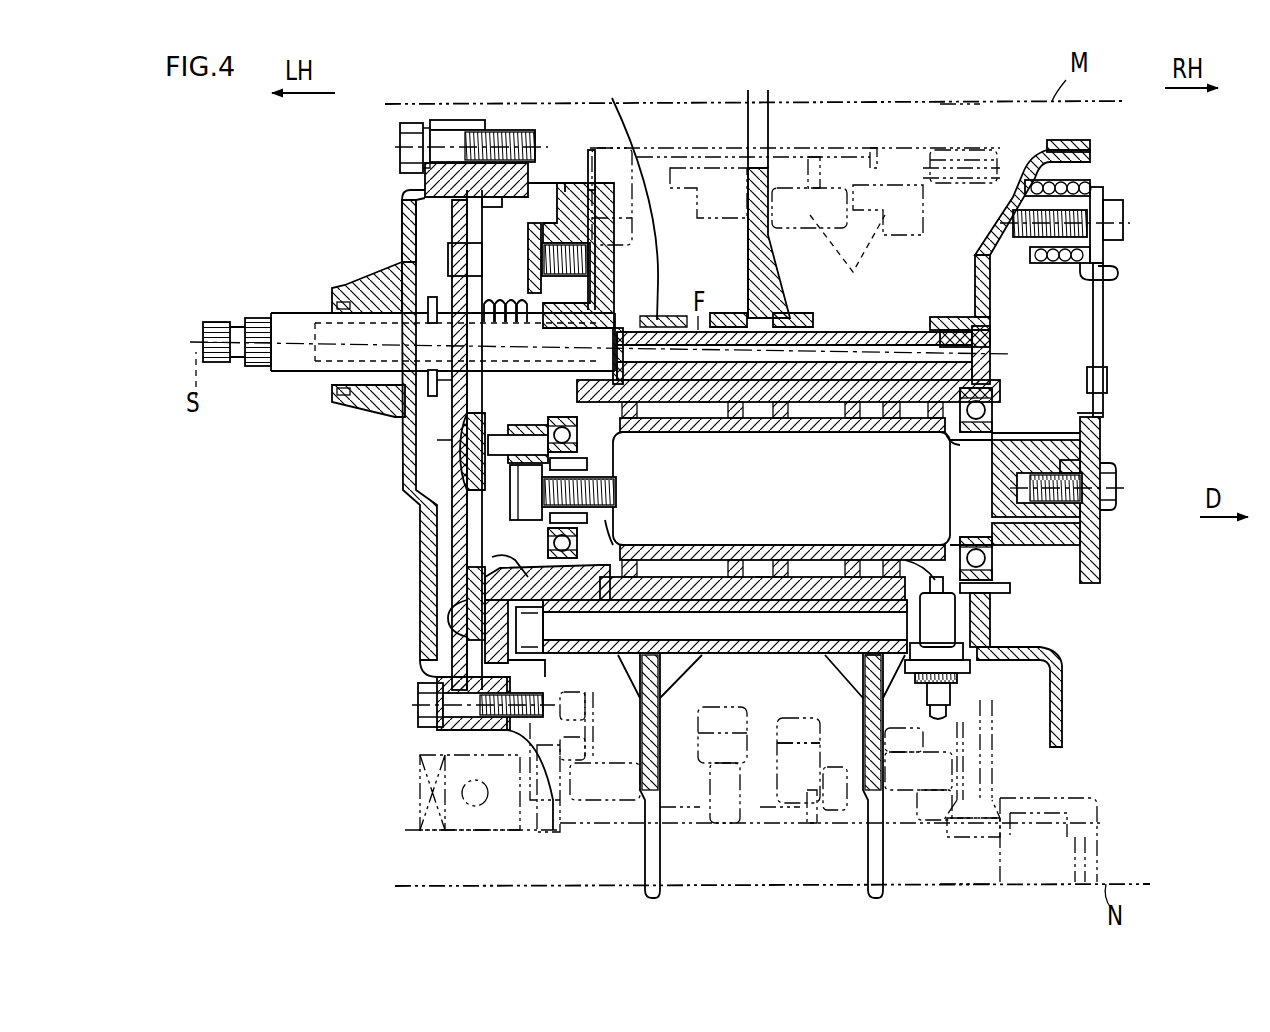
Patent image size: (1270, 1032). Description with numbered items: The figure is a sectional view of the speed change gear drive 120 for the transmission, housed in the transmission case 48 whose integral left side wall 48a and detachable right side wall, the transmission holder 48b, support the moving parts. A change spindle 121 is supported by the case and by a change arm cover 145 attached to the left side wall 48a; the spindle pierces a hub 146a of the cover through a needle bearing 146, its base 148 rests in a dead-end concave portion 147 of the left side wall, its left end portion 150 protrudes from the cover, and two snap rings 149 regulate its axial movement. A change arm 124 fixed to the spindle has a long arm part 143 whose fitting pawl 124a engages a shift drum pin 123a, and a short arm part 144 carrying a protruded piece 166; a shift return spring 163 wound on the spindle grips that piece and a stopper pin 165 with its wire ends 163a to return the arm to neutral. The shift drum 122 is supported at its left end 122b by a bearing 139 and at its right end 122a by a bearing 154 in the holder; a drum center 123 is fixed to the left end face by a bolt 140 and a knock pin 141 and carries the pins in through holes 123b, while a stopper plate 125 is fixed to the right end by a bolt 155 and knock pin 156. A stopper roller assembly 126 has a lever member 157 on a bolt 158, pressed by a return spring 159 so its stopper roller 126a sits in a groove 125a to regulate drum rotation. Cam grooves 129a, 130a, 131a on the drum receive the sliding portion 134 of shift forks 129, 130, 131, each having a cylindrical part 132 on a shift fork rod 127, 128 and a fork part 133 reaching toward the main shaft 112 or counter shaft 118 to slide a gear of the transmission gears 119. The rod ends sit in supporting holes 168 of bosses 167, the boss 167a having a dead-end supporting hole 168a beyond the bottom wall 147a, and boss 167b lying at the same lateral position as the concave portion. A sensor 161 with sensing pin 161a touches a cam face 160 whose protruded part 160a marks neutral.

The main shaft 112 is at (958, 104).
The counter shaft 118 is at (961, 884).
The group of transmission gears 119 is at (773, 723).
The speed change gear drive 120 is at (1140, 296).
The change spindle 121 is at (306, 312).
The shift drum 122 is at (618, 625).
The right end of shift drum 122a is at (1020, 463).
The left end of shift drum 122b is at (613, 530).
The drum center 123 is at (470, 610).
The shift drum pin 123a is at (482, 548).
The through hole 123b is at (428, 680).
The change arm 124 is at (532, 561).
The fitting pawl 124a is at (448, 579).
The stopper plate 125 is at (1100, 440).
The groove 125a is at (1080, 413).
The stopper roller assembly 126 is at (1110, 352).
The stopper roller 126a is at (1104, 386).
The shift fork rod 127 is at (897, 330).
The shift fork rod 128 is at (779, 733).
The shift fork 129 is at (668, 727).
The cam groove 129a is at (705, 405).
The shift fork 130 is at (745, 226).
The cam groove 130a is at (763, 567).
The shift fork 131 is at (861, 757).
The cam groove 131a is at (872, 423).
The cylindrical part 132 is at (782, 318).
The fork part 133 is at (772, 126).
The sliding portion 134 is at (758, 420).
The bearing 139 is at (552, 830).
The bolt 140 is at (520, 493).
The knock pin 141 is at (560, 447).
The long arm part 143 is at (455, 528).
The short arm part 144 is at (418, 188).
The change arm cover 145 is at (420, 517).
The needle bearing 146 is at (386, 297).
The hub 146a is at (340, 391).
The dead-end concave portion 147 is at (620, 428).
The bottom wall of concave portion 147a is at (592, 300).
The base of change spindle 148 is at (600, 255).
The snap ring 149 is at (433, 297).
The shaft spline 150 is at (216, 320).
The bearing 154 is at (996, 410).
The bolt 155 is at (1118, 494).
The knock pin 156 is at (1080, 467).
The lever member 157 is at (1105, 326).
The bolt 158 is at (1123, 216).
The return spring 159 is at (1076, 185).
The cam face 160 is at (914, 562).
The protruded part 160a is at (952, 566).
The sensor 161 is at (958, 628).
The sensing pin 161a is at (984, 588).
The shift return spring 163 is at (590, 188).
The wire end 163a is at (468, 200).
The stopper pin 165 is at (522, 250).
The protruded piece 166 is at (491, 195).
The boss 167 is at (940, 328).
The boss 167a is at (672, 320).
The boss 167b is at (455, 727).
The supporting hole 168 is at (990, 345).
The supporting hole 168a is at (641, 195).
The transmission case 48 is at (460, 427).
The left side wall 48a is at (386, 434).
The transmission holder 48b is at (990, 297).